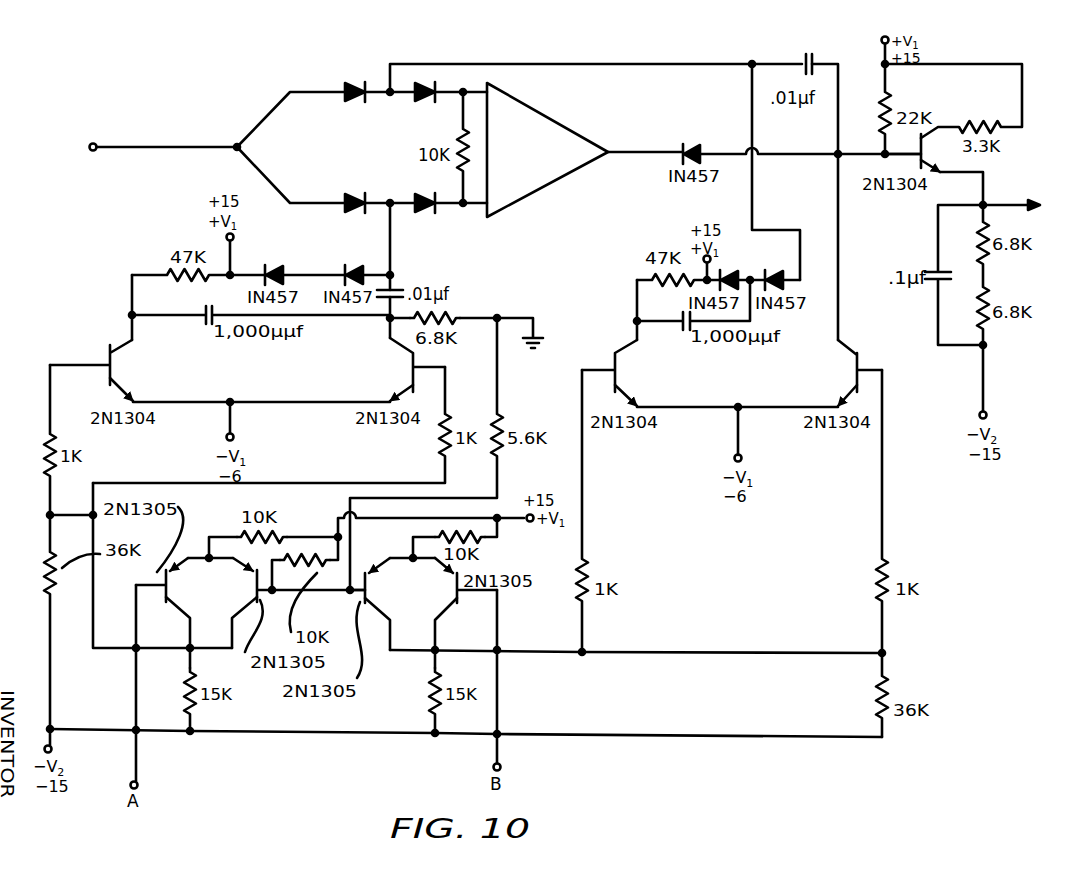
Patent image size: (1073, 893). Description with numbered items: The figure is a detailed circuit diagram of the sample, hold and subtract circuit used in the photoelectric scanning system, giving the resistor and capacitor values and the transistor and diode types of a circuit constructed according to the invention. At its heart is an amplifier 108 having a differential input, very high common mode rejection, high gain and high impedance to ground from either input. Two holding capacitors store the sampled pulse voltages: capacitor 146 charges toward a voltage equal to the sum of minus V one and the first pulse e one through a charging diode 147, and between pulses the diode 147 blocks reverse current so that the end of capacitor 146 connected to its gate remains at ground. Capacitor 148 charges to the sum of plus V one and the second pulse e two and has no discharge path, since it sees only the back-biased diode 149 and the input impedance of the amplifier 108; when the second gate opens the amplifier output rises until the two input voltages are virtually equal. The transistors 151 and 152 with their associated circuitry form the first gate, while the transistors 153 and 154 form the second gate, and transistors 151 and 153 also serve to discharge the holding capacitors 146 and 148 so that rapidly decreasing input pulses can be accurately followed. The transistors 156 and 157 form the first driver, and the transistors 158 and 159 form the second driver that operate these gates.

The amplifier 108 is at (549, 137).
The capacitor 146 is at (398, 284).
The charging diode 147 is at (352, 193).
The capacitor 148 is at (803, 62).
The diode 149 is at (352, 82).
The transistor 151 is at (118, 368).
The transistor 152 is at (400, 375).
The transistor 153 is at (623, 381).
The transistor 154 is at (850, 376).
The transistor 156 is at (178, 592).
The transistor 157 is at (244, 590).
The transistor 158 is at (373, 596).
The transistor 159 is at (452, 590).